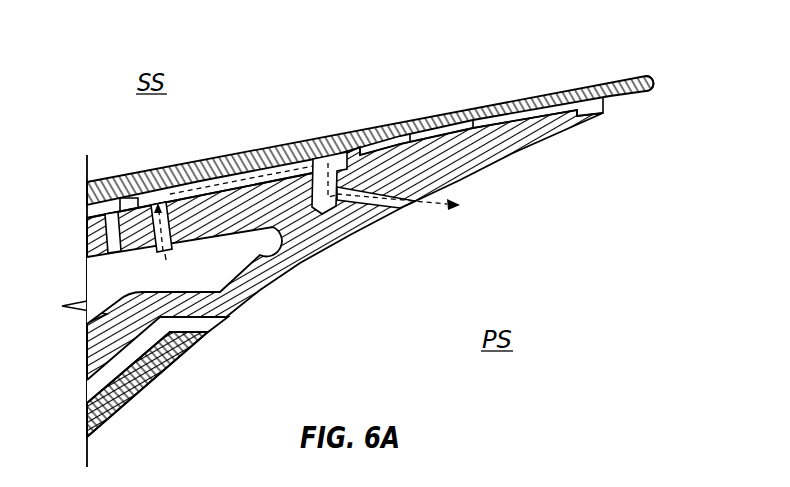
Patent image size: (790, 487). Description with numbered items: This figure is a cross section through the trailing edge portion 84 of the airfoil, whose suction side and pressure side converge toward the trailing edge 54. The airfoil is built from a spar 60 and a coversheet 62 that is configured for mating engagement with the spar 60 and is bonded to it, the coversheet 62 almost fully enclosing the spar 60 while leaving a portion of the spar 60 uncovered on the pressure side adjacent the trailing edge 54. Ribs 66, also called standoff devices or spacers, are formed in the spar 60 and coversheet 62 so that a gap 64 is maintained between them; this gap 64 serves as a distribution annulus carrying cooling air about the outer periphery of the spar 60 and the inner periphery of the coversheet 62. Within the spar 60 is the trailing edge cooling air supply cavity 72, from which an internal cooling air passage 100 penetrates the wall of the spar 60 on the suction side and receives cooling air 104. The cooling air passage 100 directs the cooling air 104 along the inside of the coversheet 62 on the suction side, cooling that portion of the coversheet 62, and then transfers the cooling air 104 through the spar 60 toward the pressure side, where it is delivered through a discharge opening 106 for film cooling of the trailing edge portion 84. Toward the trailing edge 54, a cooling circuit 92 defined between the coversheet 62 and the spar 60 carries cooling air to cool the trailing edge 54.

The trailing edge 54 is at (659, 69).
The spar 60 is at (300, 264).
The coversheet 62 is at (402, 122).
The gap 64 is at (97, 220).
The ribs (standoff devices, spacers) 66 is at (112, 201).
The trailing edge cooling air supply cavity 72 is at (141, 287).
The trailing edge portion 84 is at (93, 117).
The cooling circuit 92 is at (522, 112).
The internal cooling air passage 100 is at (172, 220).
The cooling air 104 is at (233, 187).
The discharge opening 106 is at (393, 207).